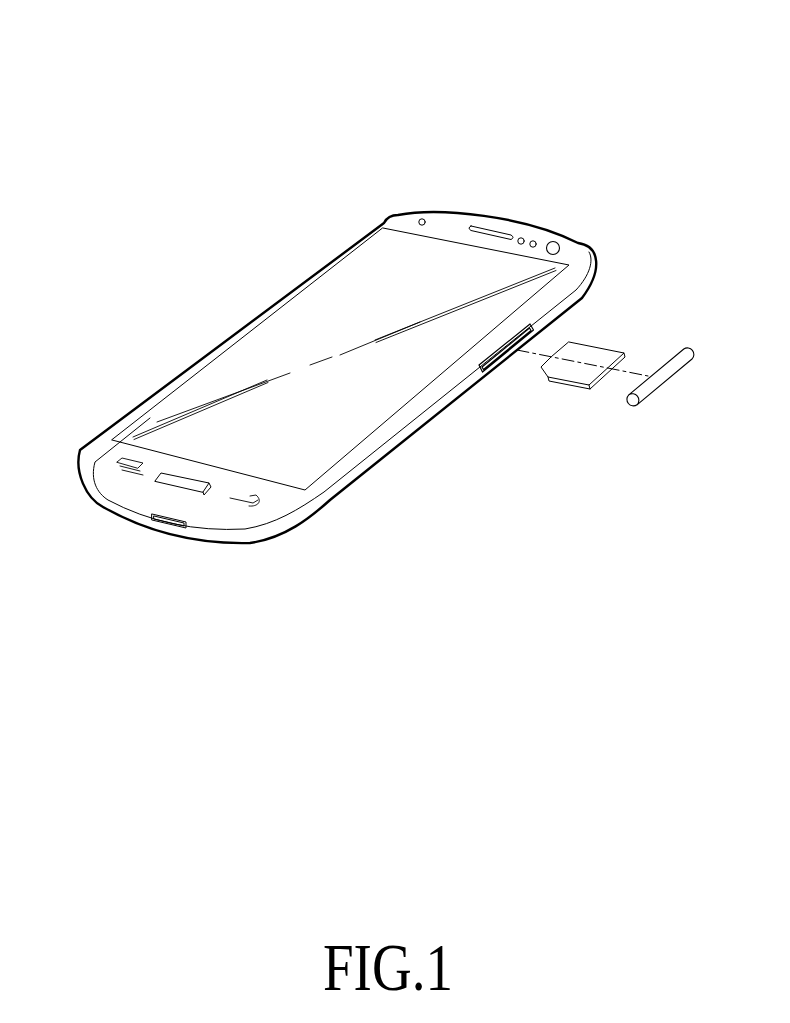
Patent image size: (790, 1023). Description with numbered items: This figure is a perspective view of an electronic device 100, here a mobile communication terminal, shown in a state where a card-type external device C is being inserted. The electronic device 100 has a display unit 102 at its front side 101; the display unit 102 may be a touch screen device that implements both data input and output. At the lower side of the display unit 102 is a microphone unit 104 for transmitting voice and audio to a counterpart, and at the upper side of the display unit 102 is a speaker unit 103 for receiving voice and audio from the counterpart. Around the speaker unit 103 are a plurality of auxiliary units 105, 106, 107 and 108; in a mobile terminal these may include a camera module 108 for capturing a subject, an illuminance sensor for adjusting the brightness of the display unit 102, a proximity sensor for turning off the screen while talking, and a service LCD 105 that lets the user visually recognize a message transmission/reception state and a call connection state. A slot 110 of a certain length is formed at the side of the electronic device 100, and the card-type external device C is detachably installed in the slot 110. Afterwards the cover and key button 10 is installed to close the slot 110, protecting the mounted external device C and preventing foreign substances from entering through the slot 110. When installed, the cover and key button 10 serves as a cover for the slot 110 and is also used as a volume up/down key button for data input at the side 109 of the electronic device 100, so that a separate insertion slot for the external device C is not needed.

The electronic device 100 is at (113, 128).
The front side 101 is at (388, 222).
The display unit 102 is at (328, 288).
The speaker unit 103 is at (493, 229).
The microphone unit 104 is at (201, 530).
The service LCD 105 is at (422, 217).
The auxiliary unit 106 is at (521, 237).
The auxiliary unit 107 is at (534, 241).
The camera module 108 is at (557, 245).
The side 109 is at (454, 401).
The slot 110 is at (500, 371).
The card-type external device C is at (597, 346).
The cover and key button 10 is at (638, 398).